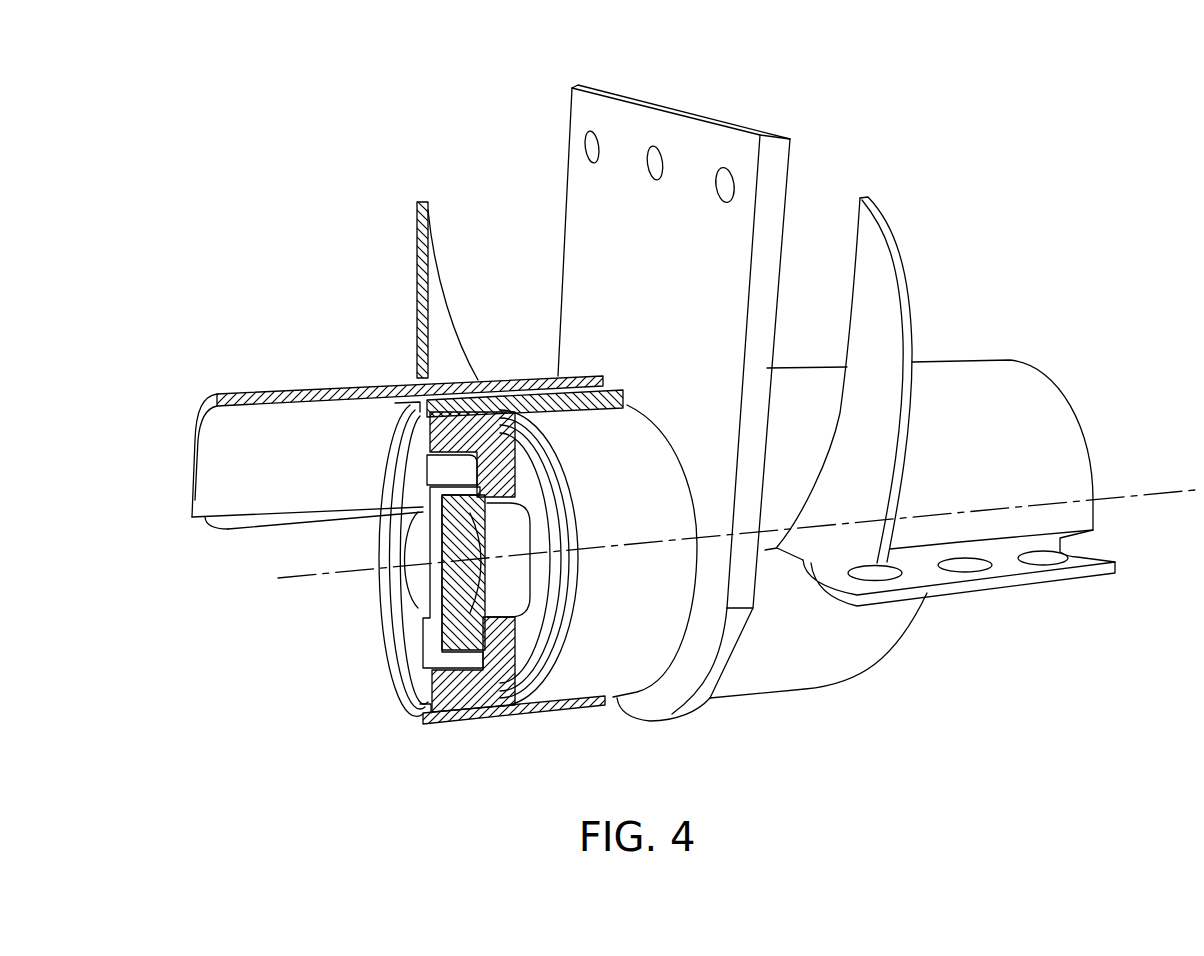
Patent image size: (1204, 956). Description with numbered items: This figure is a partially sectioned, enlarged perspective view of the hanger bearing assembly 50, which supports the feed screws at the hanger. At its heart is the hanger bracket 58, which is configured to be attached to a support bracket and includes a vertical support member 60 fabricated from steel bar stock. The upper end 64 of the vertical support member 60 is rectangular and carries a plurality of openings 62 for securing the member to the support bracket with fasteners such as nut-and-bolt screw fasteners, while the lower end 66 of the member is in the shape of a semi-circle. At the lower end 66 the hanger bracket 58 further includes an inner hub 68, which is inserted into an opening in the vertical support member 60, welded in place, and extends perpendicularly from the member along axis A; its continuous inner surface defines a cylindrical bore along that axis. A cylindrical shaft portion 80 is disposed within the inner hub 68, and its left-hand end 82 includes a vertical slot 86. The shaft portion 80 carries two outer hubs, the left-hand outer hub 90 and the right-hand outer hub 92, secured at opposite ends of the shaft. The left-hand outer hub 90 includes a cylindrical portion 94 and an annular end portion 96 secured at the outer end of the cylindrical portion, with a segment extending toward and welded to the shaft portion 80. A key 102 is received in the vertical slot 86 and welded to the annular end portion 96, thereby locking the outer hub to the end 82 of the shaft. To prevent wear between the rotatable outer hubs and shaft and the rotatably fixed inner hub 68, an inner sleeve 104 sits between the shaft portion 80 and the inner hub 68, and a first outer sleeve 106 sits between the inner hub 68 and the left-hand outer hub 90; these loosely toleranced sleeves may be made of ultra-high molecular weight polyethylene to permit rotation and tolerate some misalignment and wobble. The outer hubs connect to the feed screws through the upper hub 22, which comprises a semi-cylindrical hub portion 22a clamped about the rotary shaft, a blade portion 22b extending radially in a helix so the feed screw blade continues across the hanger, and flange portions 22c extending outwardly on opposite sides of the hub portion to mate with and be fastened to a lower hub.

The hanger bearing assembly 50 is at (288, 222).
The hanger bracket 58 is at (773, 122).
The vertical support member 60 is at (580, 255).
The openings 62 is at (652, 155).
The upper end 64 is at (693, 140).
The lower end 66 is at (652, 705).
The inner hub 68 is at (537, 667).
The shaft portion 80 is at (490, 707).
The left-hand end 82 is at (513, 420).
The vertical slot 86 is at (443, 577).
The left-hand outer hub 90 is at (436, 730).
The right-hand outer hub 92 is at (823, 688).
The cylindrical portion 94 is at (487, 405).
The annular end portion 96 is at (423, 706).
The key 102 is at (440, 630).
The inner sleeve 104 is at (460, 562).
The first outer sleeve 106 is at (600, 655).
The upper hub 22 is at (262, 392).
The semi-cylindrical hub portion 22a is at (228, 467).
The blade portion 22b is at (438, 324).
The flange portions 22c is at (1042, 577).
The axis A is at (1128, 495).